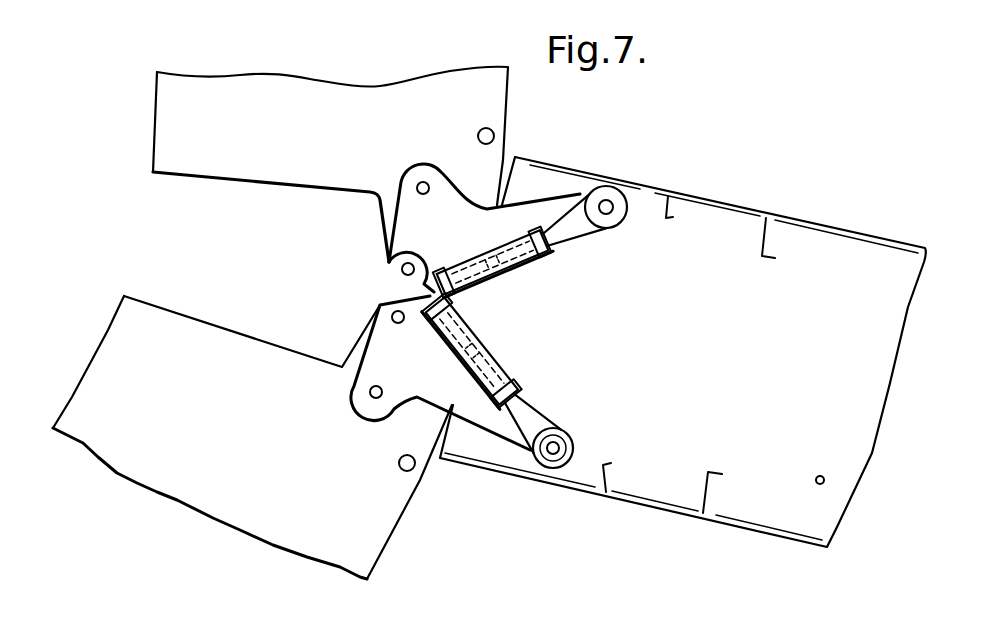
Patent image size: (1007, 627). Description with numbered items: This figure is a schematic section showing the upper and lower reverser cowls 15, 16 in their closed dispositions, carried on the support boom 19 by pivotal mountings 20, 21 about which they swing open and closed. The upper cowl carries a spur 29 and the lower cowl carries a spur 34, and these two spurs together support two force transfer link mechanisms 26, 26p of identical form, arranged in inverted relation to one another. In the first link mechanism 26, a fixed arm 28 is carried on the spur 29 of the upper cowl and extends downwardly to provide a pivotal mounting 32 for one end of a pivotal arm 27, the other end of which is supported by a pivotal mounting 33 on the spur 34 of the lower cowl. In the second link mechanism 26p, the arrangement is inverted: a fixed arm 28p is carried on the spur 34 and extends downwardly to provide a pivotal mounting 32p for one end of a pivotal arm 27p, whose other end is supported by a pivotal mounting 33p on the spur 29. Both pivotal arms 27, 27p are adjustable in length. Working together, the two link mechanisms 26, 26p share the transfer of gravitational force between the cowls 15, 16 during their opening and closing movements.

The upper reverser cowl 15 is at (357, 108).
The lower reverser cowl 16 is at (242, 508).
The support boom 19 is at (733, 208).
The pivotal mounting 20 is at (495, 136).
The pivotal mounting 21 is at (411, 470).
The force transfer link mechanism 26 is at (668, 292).
The force transfer link mechanism 26p is at (678, 392).
The pivotal arm 27 is at (505, 280).
The pivotal arm 27p is at (497, 356).
The fixed arm 28 is at (532, 213).
The fixed arm 28p is at (482, 413).
The spur 29 is at (366, 222).
The pivotal mounting 32 is at (613, 202).
The pivotal mounting 32p is at (570, 463).
The pivotal mounting 33 is at (393, 312).
The pivotal mounting 33p is at (401, 271).
The spur 34 is at (341, 331).